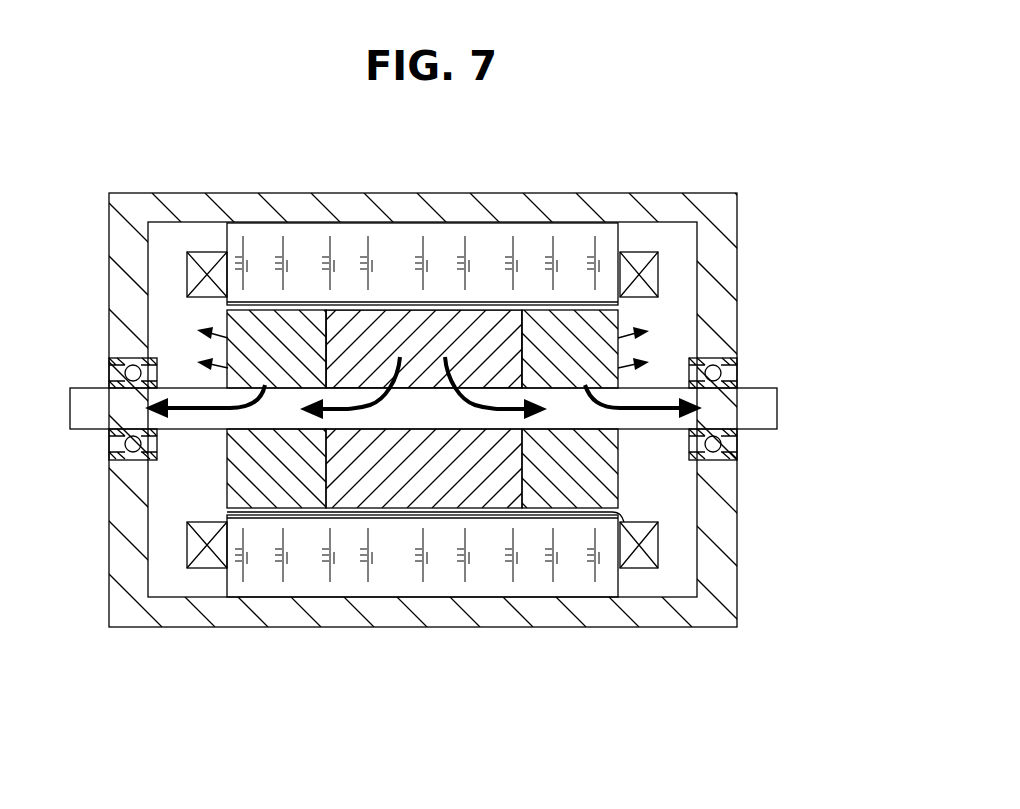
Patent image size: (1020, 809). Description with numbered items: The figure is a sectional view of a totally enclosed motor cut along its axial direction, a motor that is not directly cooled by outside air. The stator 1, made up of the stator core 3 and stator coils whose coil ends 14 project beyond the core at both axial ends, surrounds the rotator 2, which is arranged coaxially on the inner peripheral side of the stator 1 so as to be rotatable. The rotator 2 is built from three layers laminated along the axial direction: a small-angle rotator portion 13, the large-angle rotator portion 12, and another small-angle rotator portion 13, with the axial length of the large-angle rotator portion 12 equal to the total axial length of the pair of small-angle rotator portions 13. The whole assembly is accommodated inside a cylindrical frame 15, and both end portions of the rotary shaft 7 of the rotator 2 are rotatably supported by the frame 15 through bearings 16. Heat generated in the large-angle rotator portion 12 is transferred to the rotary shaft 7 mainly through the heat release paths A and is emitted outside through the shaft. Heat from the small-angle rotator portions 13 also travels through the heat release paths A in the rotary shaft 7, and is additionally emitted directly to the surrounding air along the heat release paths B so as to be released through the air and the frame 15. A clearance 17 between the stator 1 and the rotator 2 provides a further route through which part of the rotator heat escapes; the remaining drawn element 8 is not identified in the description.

The stator 1 is at (422, 361).
The rotator 2 is at (492, 502).
The stator core 3 is at (455, 262).
The rotary shaft 7 is at (750, 395).
The rotor core 8 is at (396, 497).
The large-angle rotator portion 12 is at (465, 497).
The small-angle rotator portion 13 is at (270, 495).
The coil end 14 is at (207, 268).
The frame 15 is at (727, 568).
The bearing 16 is at (110, 360).
The clearance 17 is at (622, 522).
The heat release path A is at (330, 414).
The heat release path B is at (215, 352).